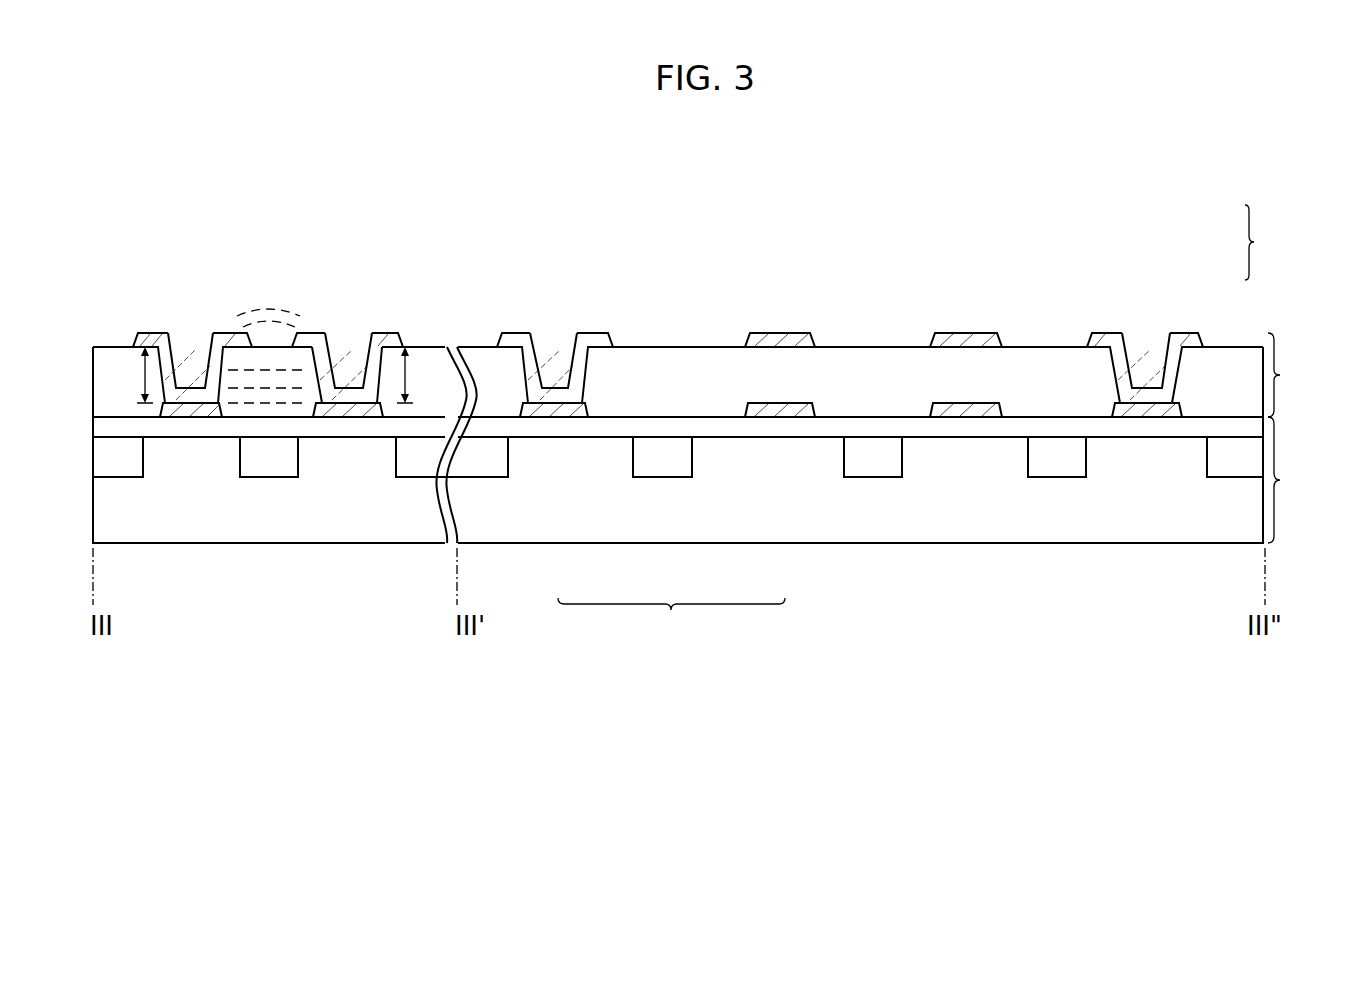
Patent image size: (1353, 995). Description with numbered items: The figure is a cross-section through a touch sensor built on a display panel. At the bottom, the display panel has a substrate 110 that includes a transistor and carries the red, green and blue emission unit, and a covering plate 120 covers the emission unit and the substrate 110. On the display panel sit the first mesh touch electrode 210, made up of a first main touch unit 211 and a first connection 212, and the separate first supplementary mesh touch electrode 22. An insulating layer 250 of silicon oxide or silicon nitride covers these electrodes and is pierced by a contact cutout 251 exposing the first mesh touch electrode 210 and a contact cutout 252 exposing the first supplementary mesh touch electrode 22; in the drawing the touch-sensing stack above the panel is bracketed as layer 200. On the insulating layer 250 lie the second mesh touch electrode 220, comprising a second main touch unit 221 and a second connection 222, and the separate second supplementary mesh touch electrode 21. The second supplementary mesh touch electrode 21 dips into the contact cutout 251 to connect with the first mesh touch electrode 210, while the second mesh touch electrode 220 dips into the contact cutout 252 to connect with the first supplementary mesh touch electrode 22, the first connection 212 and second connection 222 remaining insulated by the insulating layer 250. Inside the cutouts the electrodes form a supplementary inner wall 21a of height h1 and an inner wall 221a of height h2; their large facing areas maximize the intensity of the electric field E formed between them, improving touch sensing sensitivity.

The second supplementary mesh touch electrode 21 is at (141, 335).
The supplementary inner wall 21a is at (201, 364).
The first supplementary mesh touch electrode 22 is at (358, 420).
The substrate 110 is at (1068, 570).
The covering plate 120 is at (818, 430).
The light emitting layer 200 is at (706, 375).
The first mesh touch electrode 210 is at (671, 618).
The first main touch unit 211 is at (195, 411).
The first connection 212 is at (758, 420).
The second mesh touch electrode 220 is at (1249, 245).
The second main touch unit 221 is at (382, 334).
The inner wall 221a is at (358, 357).
The second connection 222 is at (776, 338).
The insulating layer 250 is at (875, 360).
The contact cutout 251 is at (187, 358).
The contact cutout 252 is at (345, 360).
The electric field E is at (281, 288).
The height h1 is at (133, 375).
The height h2 is at (418, 375).